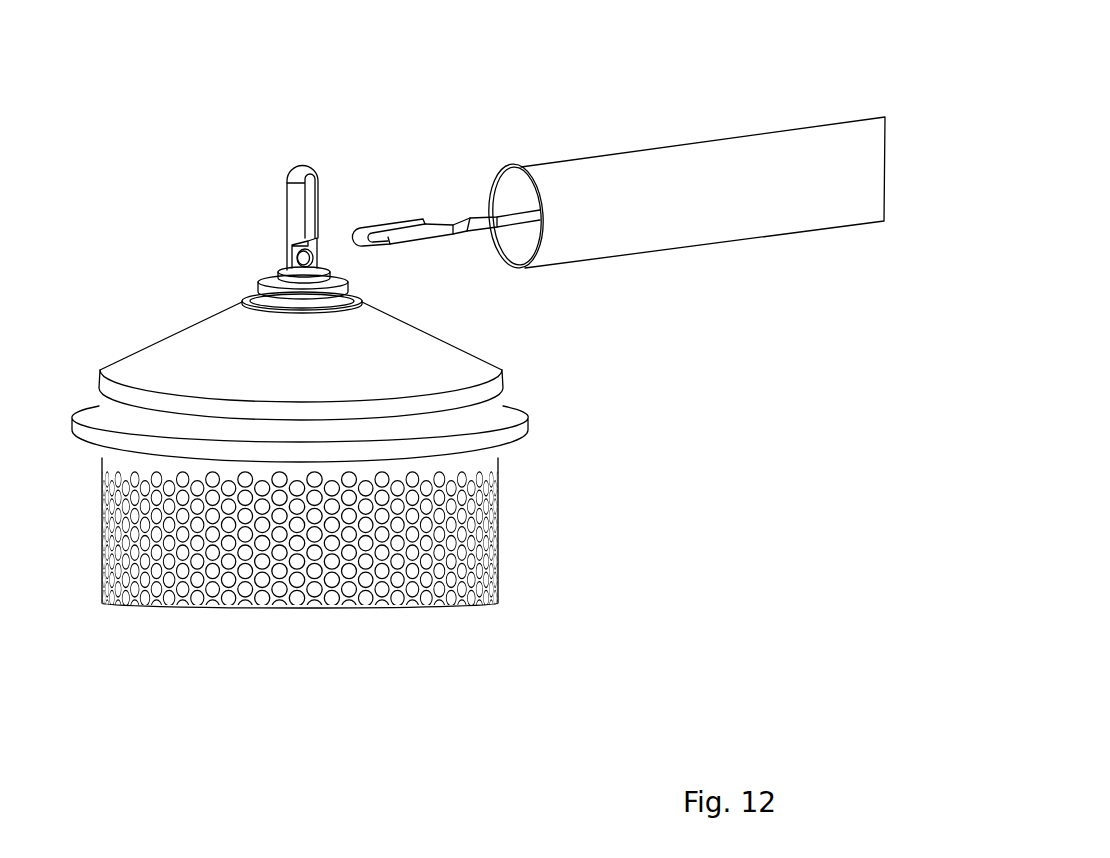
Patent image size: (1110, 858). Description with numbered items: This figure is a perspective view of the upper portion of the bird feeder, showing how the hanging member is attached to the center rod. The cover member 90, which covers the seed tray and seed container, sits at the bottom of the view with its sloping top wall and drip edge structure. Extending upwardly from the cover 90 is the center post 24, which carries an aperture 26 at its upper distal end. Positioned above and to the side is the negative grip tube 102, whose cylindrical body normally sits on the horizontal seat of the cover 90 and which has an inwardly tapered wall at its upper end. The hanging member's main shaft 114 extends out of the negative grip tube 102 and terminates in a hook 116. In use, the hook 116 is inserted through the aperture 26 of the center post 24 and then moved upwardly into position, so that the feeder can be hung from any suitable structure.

The cover member 90 is at (160, 325).
The center post 24 is at (298, 200).
The aperture 26 is at (292, 253).
The negative grip tube 102 is at (693, 117).
The main shaft 114 is at (508, 210).
The hook 116 is at (398, 220).